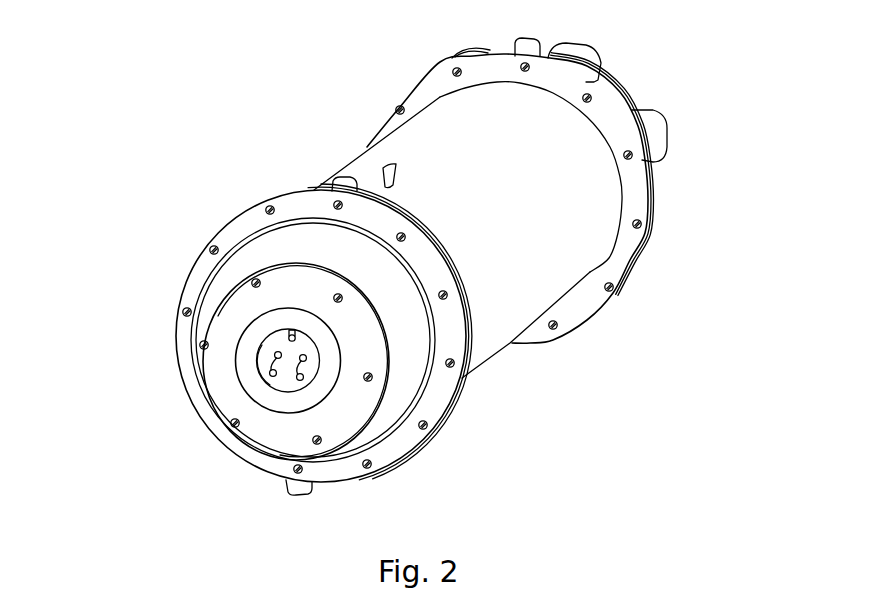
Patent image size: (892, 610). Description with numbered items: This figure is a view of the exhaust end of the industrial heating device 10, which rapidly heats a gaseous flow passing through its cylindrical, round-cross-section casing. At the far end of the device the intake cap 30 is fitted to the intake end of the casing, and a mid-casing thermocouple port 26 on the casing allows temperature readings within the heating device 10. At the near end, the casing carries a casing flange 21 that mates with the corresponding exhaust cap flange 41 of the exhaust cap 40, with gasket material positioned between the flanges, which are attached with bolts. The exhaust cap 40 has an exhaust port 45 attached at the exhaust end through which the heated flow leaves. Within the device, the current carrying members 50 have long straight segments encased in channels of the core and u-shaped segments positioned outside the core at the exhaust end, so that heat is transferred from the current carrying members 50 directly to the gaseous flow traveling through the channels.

The industrial heating device 10 is at (407, 277).
The casing flange 21 is at (620, 267).
The mid-casing thermocouple port 26 is at (373, 168).
The intake cap 30 is at (622, 101).
The exhaust cap 40 is at (293, 247).
The exhaust cap flange 41 is at (400, 447).
The exhaust port 45 is at (187, 406).
The current carrying members 50 is at (297, 383).